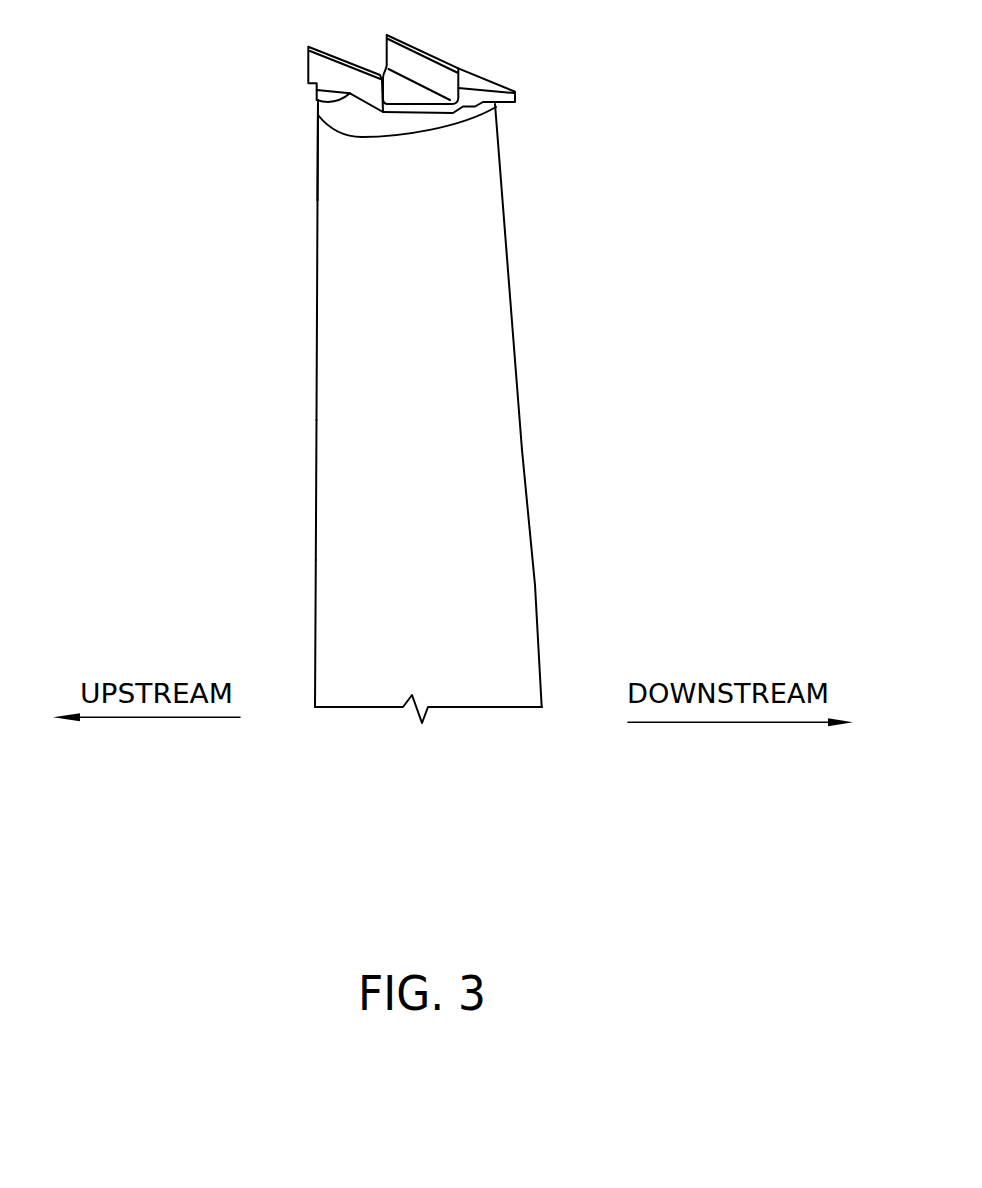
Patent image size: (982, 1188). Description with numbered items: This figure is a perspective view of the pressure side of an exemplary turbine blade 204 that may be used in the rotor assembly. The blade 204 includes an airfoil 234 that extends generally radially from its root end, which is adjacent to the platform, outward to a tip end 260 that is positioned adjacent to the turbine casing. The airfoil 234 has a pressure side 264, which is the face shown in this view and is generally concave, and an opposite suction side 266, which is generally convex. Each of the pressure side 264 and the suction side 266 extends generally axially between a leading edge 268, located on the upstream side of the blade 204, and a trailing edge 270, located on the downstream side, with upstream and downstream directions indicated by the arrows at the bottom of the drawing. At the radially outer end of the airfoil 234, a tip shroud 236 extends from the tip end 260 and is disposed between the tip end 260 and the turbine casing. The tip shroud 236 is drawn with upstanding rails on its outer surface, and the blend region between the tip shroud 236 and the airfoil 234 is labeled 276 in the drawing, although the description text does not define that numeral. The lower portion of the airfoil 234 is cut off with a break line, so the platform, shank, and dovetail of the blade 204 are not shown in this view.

The turbine blade 204 is at (442, 415).
The airfoil 234 is at (363, 518).
The tip shroud 236 is at (528, 68).
The tip end 260 is at (357, 173).
The pressure side 264 is at (407, 632).
The suction side 266 is at (537, 618).
The leading edge 268 is at (317, 415).
The trailing edge 270 is at (533, 573).
The fillet 276 is at (352, 125).